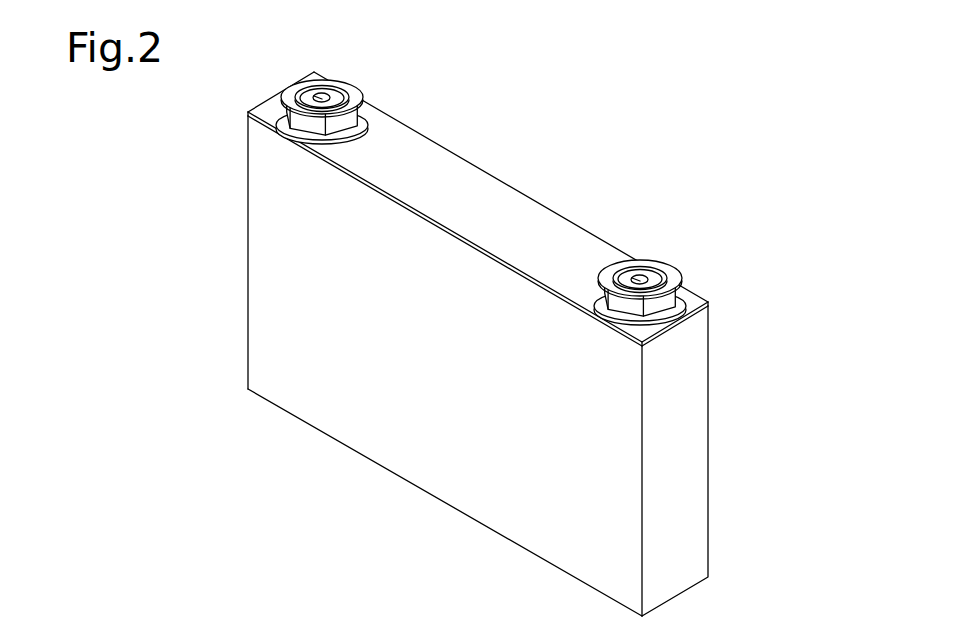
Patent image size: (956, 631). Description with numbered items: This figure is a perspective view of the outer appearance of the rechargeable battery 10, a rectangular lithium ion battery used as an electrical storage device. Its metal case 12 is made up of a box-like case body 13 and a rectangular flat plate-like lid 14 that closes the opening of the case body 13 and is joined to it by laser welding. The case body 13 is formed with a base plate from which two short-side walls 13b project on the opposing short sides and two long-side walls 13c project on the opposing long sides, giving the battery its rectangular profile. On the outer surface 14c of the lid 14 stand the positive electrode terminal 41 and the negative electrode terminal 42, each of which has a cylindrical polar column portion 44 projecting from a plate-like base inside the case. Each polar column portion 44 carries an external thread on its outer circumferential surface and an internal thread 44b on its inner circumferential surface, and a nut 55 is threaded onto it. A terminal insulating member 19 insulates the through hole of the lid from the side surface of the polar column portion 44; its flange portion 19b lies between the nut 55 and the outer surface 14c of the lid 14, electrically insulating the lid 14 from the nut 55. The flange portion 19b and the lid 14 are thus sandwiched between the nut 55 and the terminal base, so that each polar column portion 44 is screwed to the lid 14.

The rechargeable battery 10 is at (742, 275).
The case 12 is at (777, 293).
The case body 13 is at (709, 328).
The short-side wall 13b is at (709, 488).
The long-side wall 13c is at (423, 486).
The lid 14 is at (709, 302).
The outer surface of the lid 14c is at (497, 188).
The terminal insulating member 19 is at (340, 141).
The flange portion 19b is at (294, 142).
The positive electrode terminal 41 is at (667, 272).
The negative electrode terminal 42 is at (351, 84).
The polar column portion 44 is at (338, 92).
The internal thread 44b is at (316, 91).
The nut 55 is at (354, 128).